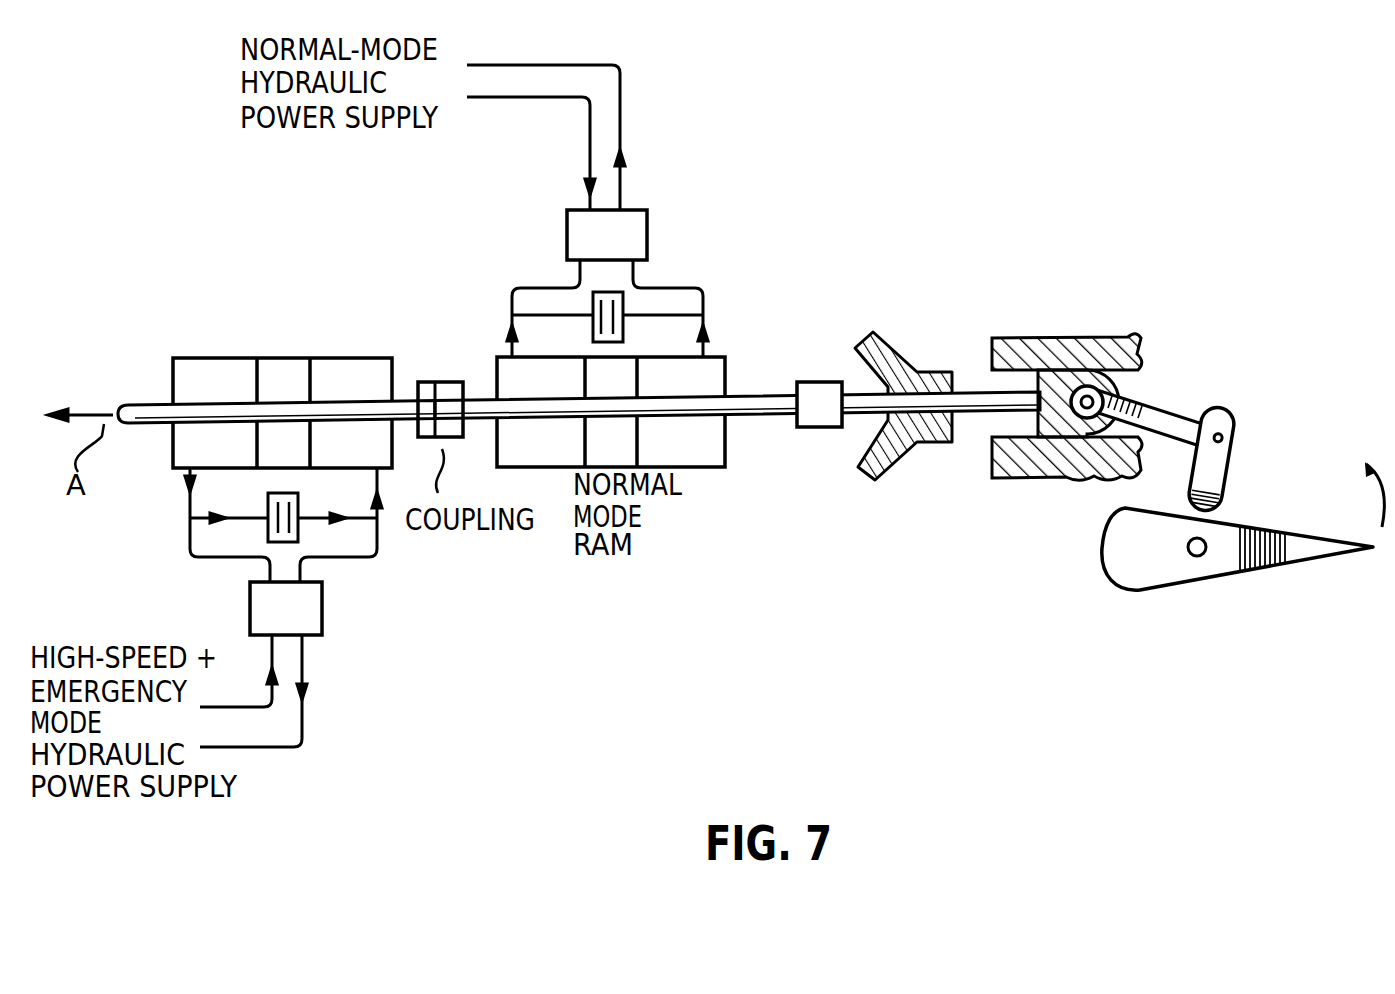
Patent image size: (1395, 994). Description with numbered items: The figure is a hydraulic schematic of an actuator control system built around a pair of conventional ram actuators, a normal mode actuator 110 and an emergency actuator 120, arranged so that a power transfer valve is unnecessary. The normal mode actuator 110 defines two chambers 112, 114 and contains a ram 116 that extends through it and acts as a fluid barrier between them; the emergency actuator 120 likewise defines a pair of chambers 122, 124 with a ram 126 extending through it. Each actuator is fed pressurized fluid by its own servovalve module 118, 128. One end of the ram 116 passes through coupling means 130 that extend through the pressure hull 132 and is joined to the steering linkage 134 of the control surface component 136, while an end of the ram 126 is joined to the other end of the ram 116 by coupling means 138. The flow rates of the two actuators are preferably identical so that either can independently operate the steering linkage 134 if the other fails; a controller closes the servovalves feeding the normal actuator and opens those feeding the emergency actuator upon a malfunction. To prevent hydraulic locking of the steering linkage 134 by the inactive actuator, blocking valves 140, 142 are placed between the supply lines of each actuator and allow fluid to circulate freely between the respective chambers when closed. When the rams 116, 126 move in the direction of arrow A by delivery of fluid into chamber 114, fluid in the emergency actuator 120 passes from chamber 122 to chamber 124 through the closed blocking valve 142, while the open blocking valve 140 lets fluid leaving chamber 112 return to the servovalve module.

The normal mode actuator 110 is at (657, 438).
The chamber 112 is at (522, 396).
The chamber 114 is at (655, 396).
The ram 116 is at (752, 403).
The servovalve module 118 is at (654, 238).
The emergency actuator 120 is at (261, 381).
The chamber 122 is at (232, 397).
The chamber 124 is at (364, 397).
The ram 126 is at (403, 412).
The servovalve module 128 is at (324, 606).
The coupling means 130 is at (823, 393).
The pressure hull 132 is at (907, 336).
The steering linkage 134 is at (1150, 390).
The control surface component 136 is at (1150, 603).
The coupling means 138 is at (452, 386).
The blocking valve 140 is at (624, 331).
The blocking valve 142 is at (298, 500).